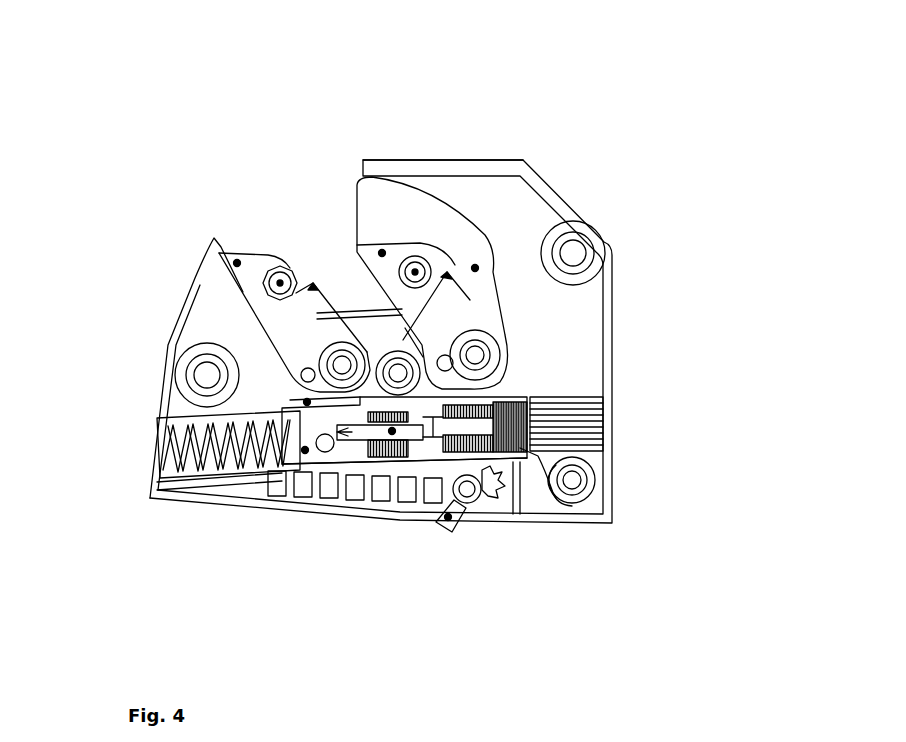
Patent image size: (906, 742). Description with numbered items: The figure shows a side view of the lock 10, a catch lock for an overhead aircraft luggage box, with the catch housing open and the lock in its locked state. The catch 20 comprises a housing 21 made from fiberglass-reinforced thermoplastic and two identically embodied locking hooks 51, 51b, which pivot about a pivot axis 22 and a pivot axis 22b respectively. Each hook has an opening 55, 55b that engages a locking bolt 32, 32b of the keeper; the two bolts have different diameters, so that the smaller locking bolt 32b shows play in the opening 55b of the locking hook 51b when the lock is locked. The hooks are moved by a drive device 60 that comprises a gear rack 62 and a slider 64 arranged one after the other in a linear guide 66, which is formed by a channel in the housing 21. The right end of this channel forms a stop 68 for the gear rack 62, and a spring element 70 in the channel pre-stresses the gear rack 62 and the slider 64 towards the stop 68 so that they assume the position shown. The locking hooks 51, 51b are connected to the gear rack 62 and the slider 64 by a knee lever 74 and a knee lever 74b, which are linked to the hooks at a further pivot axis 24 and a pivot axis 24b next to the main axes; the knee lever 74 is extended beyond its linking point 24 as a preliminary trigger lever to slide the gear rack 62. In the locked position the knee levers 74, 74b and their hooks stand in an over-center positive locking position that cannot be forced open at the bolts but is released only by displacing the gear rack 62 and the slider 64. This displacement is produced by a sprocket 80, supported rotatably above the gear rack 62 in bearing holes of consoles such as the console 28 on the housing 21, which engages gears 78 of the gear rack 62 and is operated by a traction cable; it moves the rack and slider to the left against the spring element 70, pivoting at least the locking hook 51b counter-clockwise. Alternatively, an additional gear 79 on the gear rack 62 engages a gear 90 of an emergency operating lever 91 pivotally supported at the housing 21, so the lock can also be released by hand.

The lock 10 is at (617, 168).
The catch 20 is at (617, 373).
The housing 21 is at (448, 362).
The pivot axis 22 is at (340, 362).
The pivot axis 22b is at (475, 352).
The pivot axis 24 is at (308, 375).
The pivot axis 24b is at (592, 212).
The console 28 is at (403, 465).
The locking bolt 32 is at (280, 283).
The locking bolt 32b is at (415, 272).
The locking hook 51 is at (237, 263).
The locking hook 51b is at (382, 253).
The opening 55 is at (313, 283).
The opening 55b is at (447, 272).
The drive device 60 is at (522, 386).
The gear rack 62 is at (560, 441).
The slider 64 is at (305, 450).
The linear guide 66 is at (193, 421).
The stop 68 is at (532, 425).
The spring element 70 is at (185, 456).
The knee lever 74 is at (307, 402).
The knee lever 74b is at (475, 268).
The gears 78 is at (556, 406).
The additional gear 79 is at (556, 500).
The sprocket 80 is at (392, 431).
The gear 90 is at (505, 515).
The emergency operating lever 91 is at (448, 517).